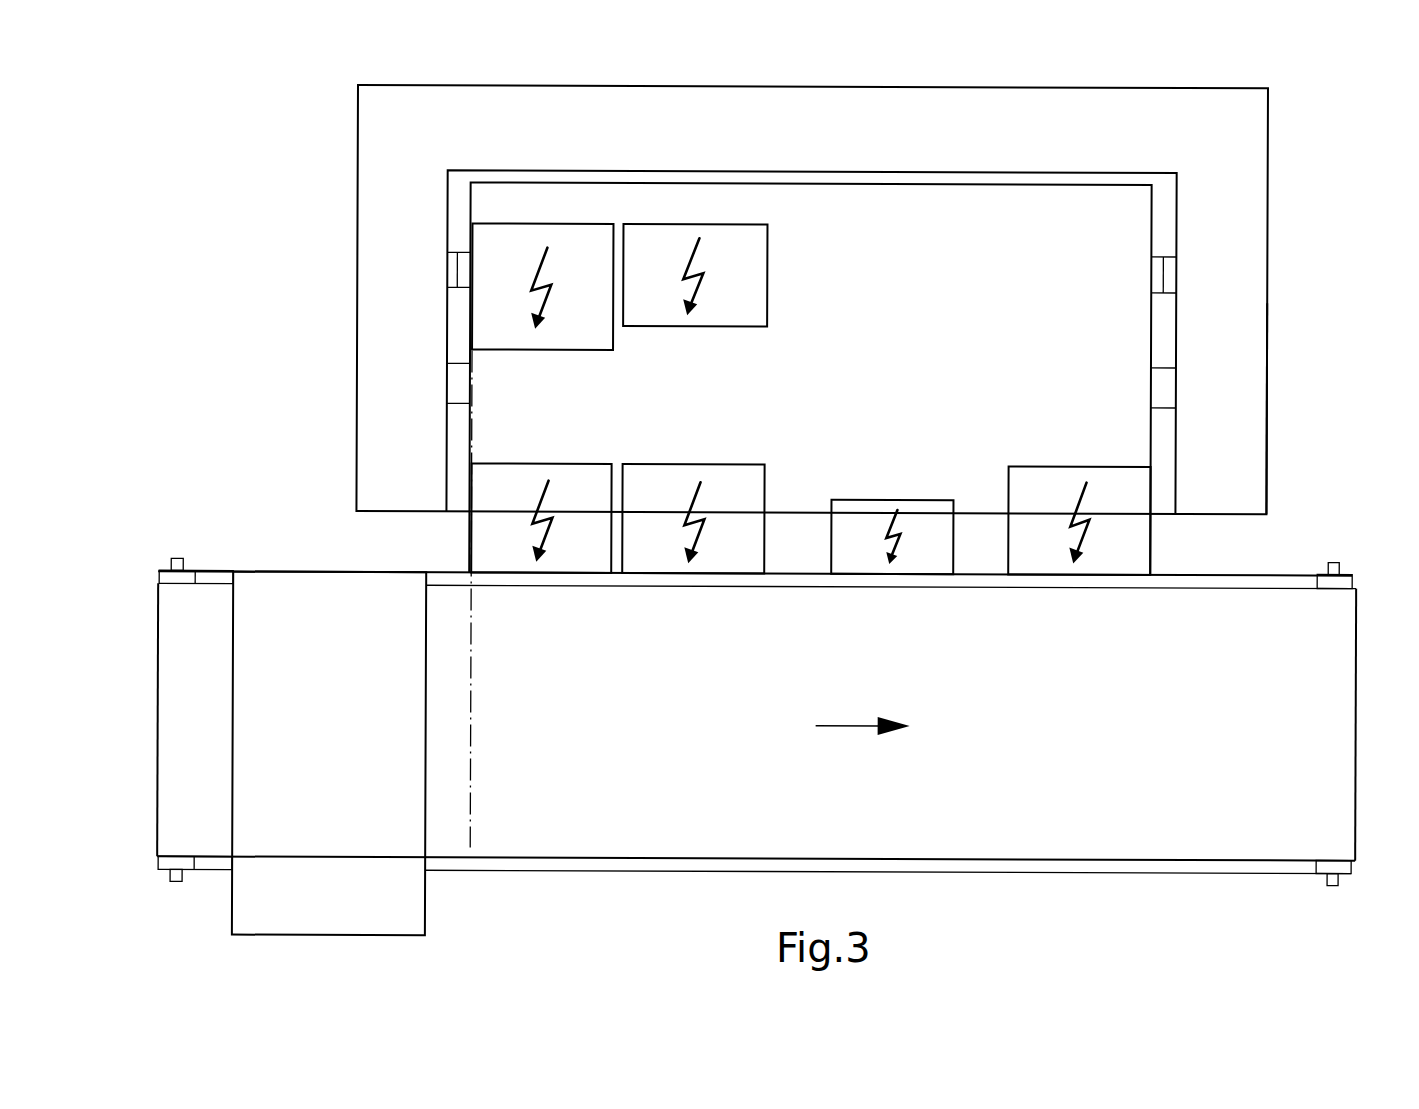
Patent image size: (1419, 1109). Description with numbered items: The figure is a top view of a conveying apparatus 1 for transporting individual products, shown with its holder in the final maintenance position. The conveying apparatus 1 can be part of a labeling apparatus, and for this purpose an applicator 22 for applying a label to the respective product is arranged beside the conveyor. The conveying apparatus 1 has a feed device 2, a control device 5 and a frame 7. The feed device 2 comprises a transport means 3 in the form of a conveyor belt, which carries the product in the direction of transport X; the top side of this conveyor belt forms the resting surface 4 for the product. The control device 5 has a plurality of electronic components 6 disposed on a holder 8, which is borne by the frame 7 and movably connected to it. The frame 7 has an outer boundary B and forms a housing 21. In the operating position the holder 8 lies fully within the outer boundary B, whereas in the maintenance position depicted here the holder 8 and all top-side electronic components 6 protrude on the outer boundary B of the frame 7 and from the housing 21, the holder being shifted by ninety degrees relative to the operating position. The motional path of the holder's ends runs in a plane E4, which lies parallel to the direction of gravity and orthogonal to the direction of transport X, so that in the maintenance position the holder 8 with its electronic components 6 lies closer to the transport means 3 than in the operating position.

The conveying apparatus 1 is at (131, 156).
The feed device 2 is at (270, 517).
The transport means 3 is at (1152, 859).
The resting surface 4 is at (1337, 721).
The control device 5 is at (432, 302).
The electronic component 6 is at (743, 273).
The frame 7 is at (1268, 282).
The holder 8 is at (1113, 331).
The housing 21 is at (1268, 374).
The applicator 22 is at (347, 767).
The outer boundary of the frame B is at (1268, 203).
The plane E4 is at (474, 764).
The direction of transport X is at (863, 714).